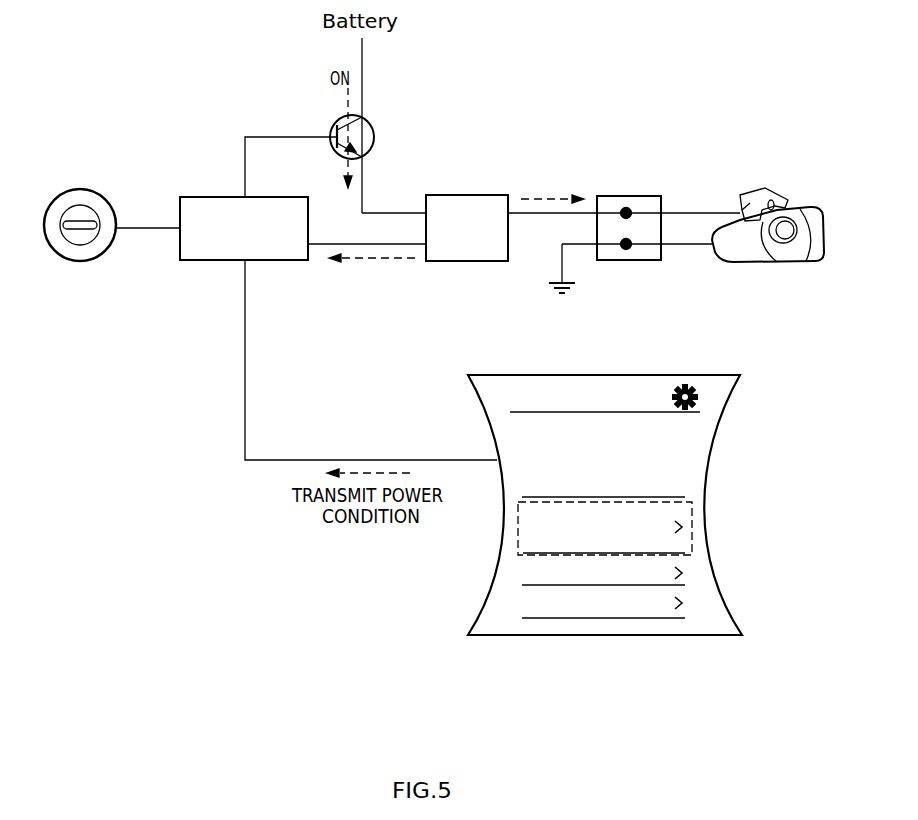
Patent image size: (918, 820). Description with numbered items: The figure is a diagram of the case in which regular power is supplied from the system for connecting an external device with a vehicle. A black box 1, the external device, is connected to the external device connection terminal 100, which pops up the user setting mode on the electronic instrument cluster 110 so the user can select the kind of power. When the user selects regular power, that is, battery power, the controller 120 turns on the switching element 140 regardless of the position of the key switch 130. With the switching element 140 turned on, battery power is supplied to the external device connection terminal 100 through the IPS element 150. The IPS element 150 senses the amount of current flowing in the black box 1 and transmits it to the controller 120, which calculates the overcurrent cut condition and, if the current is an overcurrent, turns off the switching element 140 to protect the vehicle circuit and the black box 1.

The black box 1 is at (765, 188).
The external device connection terminal 100 is at (627, 196).
The electronic instrument cluster 110 is at (740, 375).
The controller 120 is at (180, 195).
The key switch 130 is at (80, 188).
The switching element 140 is at (372, 120).
The intelligent power switch (IPS) element 150 is at (466, 195).